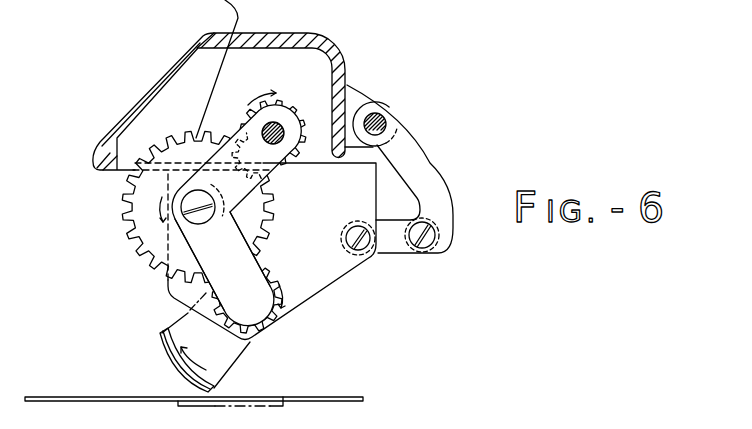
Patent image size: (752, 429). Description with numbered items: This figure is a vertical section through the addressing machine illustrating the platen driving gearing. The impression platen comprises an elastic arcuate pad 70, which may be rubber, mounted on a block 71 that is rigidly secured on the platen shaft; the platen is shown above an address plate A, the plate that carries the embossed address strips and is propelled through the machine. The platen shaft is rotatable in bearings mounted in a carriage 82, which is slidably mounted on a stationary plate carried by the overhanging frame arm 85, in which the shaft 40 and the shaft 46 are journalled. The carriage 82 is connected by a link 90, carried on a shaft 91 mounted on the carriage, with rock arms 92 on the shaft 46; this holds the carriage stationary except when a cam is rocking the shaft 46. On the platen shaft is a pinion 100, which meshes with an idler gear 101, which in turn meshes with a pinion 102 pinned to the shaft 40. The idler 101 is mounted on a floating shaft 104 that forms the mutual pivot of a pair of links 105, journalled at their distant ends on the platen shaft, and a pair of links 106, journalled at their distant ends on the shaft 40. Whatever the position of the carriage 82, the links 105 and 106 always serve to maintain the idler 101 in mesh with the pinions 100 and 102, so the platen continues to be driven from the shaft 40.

The overhanging frame arm 85 is at (253, 44).
The shaft 40 is at (268, 124).
The shaft 46 is at (387, 120).
The rock arms 92 is at (417, 157).
The pinion 102 is at (253, 113).
The idler gear 101 is at (197, 200).
The links 106 is at (262, 183).
The carriage 82 is at (254, 251).
The shaft 91 is at (347, 238).
The link 90 is at (396, 250).
The links 105 is at (232, 243).
The floating shaft 104 is at (183, 223).
The pinion 100 is at (270, 280).
The elastic arcuate pad 70 is at (165, 352).
The block 71 is at (230, 356).
The address plate A is at (278, 398).